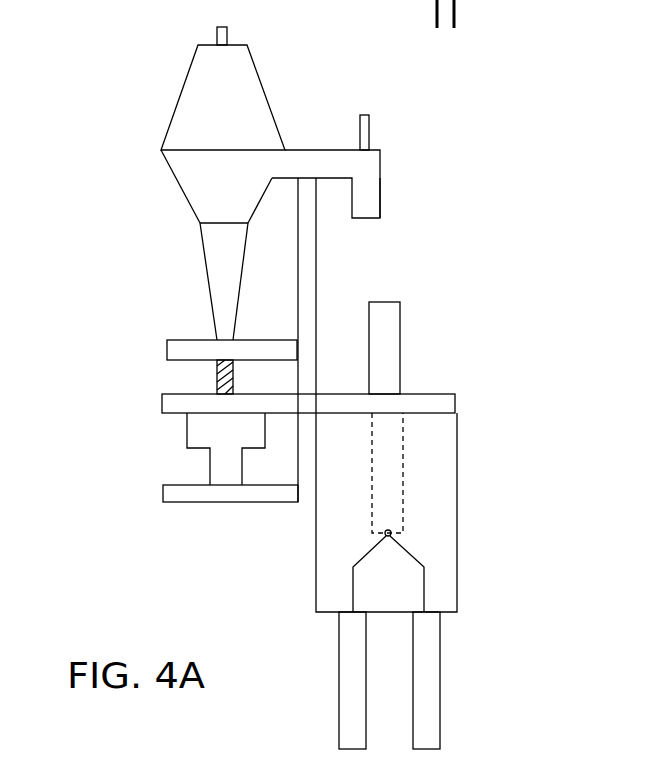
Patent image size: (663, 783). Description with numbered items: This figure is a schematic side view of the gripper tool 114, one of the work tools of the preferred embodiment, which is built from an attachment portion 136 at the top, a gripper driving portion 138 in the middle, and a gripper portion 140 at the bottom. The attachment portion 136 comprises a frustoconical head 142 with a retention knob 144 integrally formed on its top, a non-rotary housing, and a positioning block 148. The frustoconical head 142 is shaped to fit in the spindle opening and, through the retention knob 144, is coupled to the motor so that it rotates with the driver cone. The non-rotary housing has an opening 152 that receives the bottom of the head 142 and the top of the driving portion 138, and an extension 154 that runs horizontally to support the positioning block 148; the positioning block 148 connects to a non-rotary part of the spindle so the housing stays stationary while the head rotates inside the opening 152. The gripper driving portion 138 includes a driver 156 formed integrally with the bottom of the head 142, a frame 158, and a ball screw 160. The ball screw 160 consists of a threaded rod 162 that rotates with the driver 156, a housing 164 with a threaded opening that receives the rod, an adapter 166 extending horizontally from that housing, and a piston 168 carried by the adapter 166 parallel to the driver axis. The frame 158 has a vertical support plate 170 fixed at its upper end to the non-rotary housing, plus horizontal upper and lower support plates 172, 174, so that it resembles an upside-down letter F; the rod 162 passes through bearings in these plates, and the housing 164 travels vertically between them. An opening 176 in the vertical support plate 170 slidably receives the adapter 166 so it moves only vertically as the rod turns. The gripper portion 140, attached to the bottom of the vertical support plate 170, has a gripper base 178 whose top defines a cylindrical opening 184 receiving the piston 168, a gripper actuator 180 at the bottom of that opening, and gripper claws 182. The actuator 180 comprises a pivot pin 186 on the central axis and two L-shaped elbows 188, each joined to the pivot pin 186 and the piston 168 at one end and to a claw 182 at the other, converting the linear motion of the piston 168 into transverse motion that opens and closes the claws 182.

The gripper tool 114 is at (115, 273).
The attachment portion 136 is at (403, 172).
The gripper driving portion 138 is at (138, 327).
The gripper portion 140 is at (492, 470).
The frustoconical head 142 is at (190, 101).
The retention knob 144 is at (215, 36).
The positioning block 148 is at (367, 131).
The opening 152 is at (196, 223).
The extension 154 is at (322, 163).
The driver 156 is at (218, 292).
The frame 158 is at (408, 265).
The ball screw 160 is at (138, 440).
The threaded rod 162 is at (218, 375).
The housing 164 is at (220, 465).
The adapter 166 is at (450, 402).
The piston 168 is at (387, 328).
The vertical support plate 170 is at (313, 263).
The upper support plate 172 is at (167, 343).
The lower support plate 174 is at (187, 496).
The opening 176 is at (318, 394).
The gripper base 178 is at (455, 532).
The gripper actuator 180 is at (492, 590).
The gripper claws 182 is at (442, 693).
The cylindrical opening 184 is at (418, 393).
The pivot pin 186 is at (385, 532).
The elbows 188 is at (426, 597).